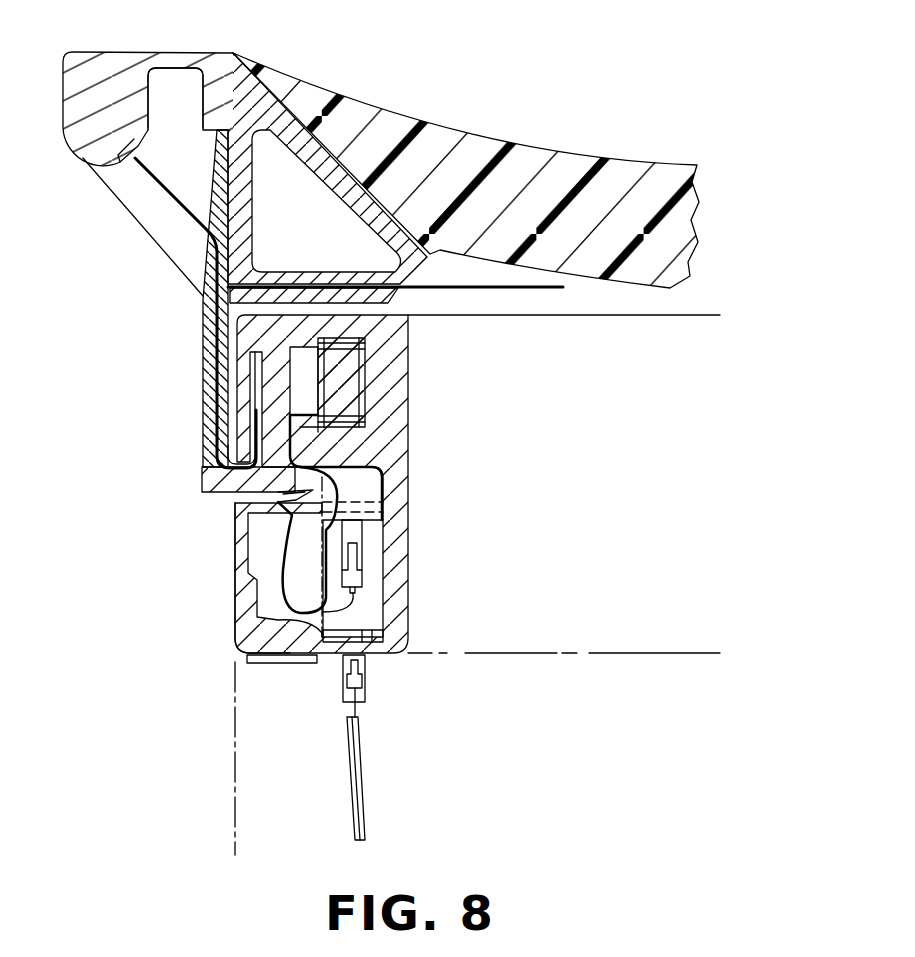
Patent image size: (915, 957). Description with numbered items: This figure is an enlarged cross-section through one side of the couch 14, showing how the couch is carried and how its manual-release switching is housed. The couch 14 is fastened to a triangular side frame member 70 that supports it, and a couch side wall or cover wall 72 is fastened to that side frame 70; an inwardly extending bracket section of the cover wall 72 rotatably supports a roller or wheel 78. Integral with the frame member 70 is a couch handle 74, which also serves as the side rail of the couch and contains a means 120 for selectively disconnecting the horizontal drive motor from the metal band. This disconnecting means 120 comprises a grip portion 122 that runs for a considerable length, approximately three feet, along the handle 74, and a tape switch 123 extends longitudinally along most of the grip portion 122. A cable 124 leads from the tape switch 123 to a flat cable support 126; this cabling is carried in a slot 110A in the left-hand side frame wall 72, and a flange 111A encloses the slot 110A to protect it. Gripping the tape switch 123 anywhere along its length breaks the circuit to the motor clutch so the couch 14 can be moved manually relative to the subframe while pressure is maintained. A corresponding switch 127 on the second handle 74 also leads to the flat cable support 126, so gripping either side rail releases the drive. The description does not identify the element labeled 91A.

The couch 14 is at (511, 136).
The triangular side frame member 70 is at (340, 178).
The couch side wall or cover wall 72 is at (209, 358).
The couch handle 74 is at (95, 136).
The roller or wheel 78 is at (340, 396).
The housing 91A is at (416, 450).
The slot 110A is at (262, 543).
The flange 111A is at (246, 599).
The disconnecting means 120 is at (203, 239).
The grip portion 122 is at (118, 170).
The tape switch 123 is at (146, 142).
The cable 124 is at (170, 194).
The flat cable support 126 is at (364, 559).
The switch 127 is at (361, 773).